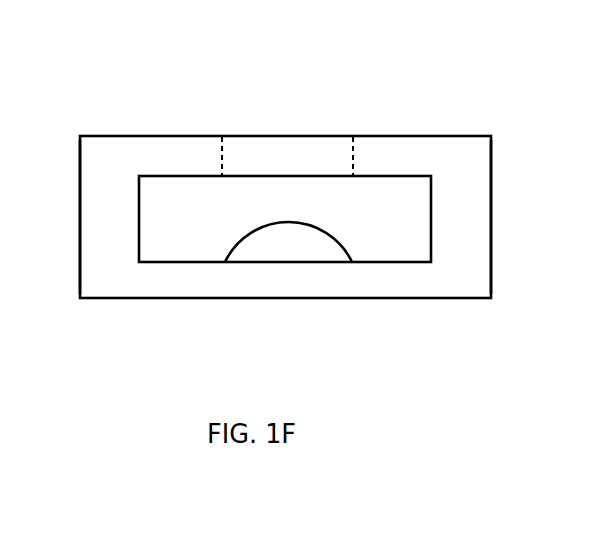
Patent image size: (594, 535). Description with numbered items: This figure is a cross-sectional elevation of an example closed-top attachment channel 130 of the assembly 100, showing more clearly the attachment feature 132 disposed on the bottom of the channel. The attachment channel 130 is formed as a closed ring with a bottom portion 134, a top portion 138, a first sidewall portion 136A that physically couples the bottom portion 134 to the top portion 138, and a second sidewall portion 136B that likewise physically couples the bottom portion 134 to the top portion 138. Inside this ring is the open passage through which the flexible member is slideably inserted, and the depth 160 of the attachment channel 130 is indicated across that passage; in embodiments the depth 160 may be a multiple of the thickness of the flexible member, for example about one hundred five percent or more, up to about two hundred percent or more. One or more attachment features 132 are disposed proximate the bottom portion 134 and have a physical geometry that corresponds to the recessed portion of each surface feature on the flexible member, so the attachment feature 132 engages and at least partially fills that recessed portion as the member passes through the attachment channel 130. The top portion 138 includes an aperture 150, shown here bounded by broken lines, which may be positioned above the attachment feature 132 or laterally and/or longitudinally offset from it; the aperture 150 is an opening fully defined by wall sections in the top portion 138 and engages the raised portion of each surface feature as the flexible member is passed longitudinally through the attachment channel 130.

The semiconductor device / structure 100 is at (446, 55).
The attachment channel 130 is at (447, 125).
The attachment feature 132 is at (307, 223).
The bottom portion 134 is at (406, 282).
The first sidewall portion 136A is at (104, 222).
The second sidewall portion 136B is at (479, 222).
The top portion 138 is at (186, 155).
The aperture 150 is at (301, 155).
The depth 160 is at (175, 180).